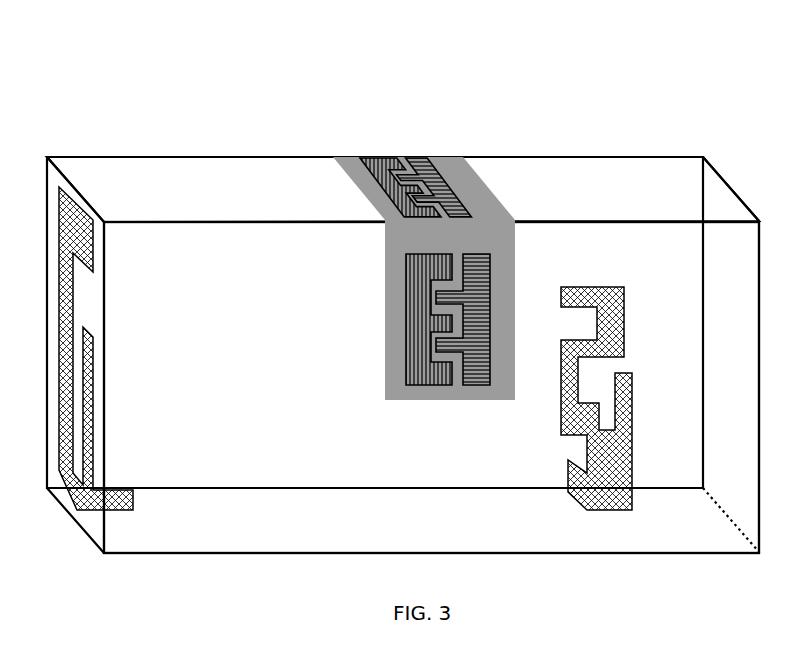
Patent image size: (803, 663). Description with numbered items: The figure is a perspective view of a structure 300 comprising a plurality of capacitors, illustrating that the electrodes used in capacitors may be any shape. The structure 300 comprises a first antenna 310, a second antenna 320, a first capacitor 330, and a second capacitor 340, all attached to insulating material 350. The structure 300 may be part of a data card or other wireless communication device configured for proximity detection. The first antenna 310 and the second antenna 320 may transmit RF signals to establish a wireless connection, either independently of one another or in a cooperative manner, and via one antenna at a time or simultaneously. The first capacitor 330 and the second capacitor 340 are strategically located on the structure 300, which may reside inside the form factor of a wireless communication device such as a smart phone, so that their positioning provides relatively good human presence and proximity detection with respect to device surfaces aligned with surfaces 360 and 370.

The structure 300 is at (72, 58).
The first antenna 310 is at (88, 530).
The second antenna 320 is at (603, 524).
The first capacitor 330 is at (396, 292).
The second capacitor 340 is at (441, 170).
The insulating material 350 is at (189, 172).
The surface 360 is at (600, 182).
The surface 370 is at (272, 440).